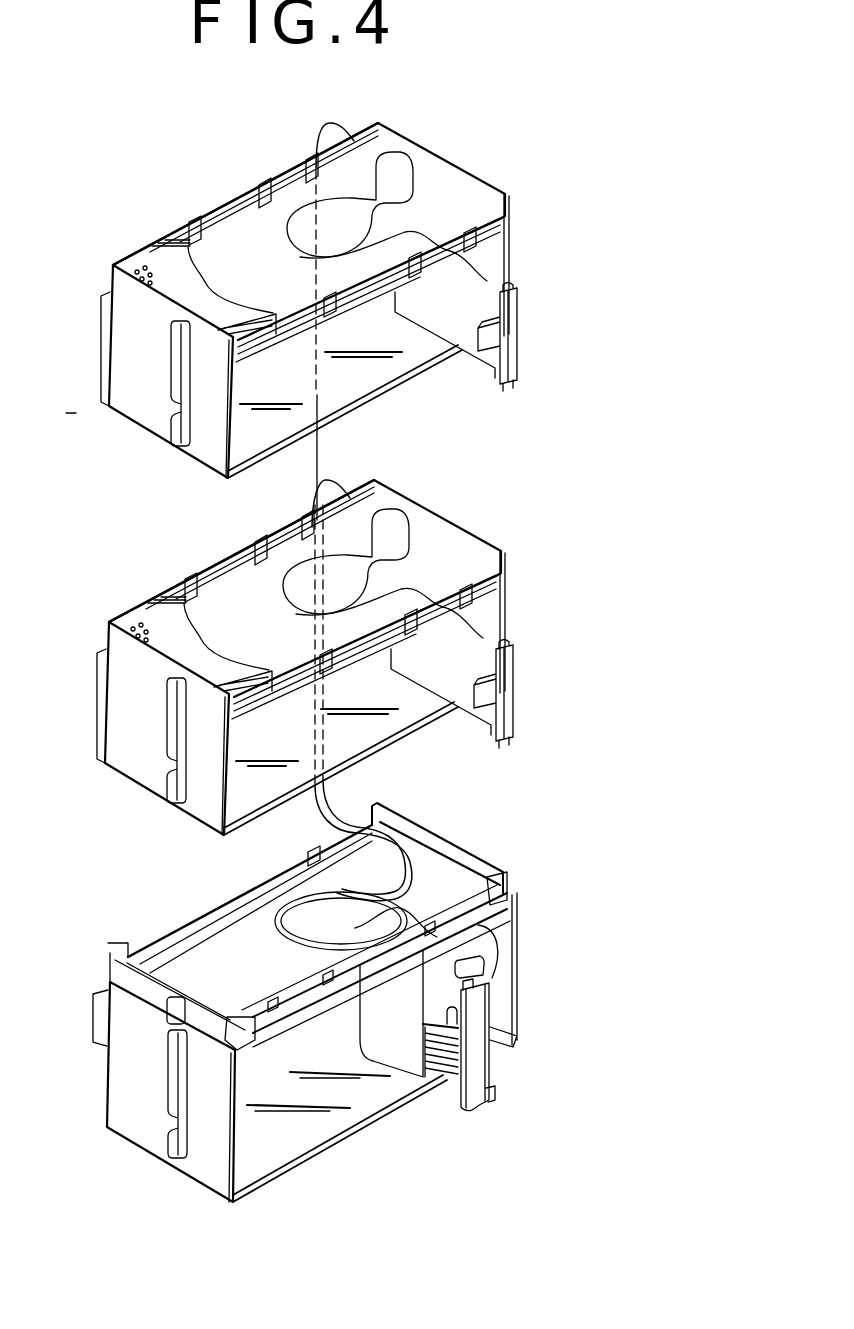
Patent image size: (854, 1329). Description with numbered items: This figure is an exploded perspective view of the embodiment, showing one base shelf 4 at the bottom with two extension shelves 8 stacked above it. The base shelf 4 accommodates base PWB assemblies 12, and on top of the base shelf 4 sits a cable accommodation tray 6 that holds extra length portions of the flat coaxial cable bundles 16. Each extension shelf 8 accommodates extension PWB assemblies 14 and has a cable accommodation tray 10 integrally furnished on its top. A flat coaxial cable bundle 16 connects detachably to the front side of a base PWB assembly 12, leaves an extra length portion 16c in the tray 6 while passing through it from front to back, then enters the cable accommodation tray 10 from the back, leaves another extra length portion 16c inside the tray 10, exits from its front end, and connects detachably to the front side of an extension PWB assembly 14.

The base shelf 4 is at (120, 1087).
The cable accommodation tray 6 is at (440, 870).
The extension shelf 8 is at (118, 283).
The cable accommodation tray 10 is at (442, 197).
The base PWB assembly 12 is at (484, 1050).
The extension PWB assembly 14 is at (510, 338).
The flat coaxial cable bundle 16 is at (320, 458).
The extra length portion 16c is at (278, 185).